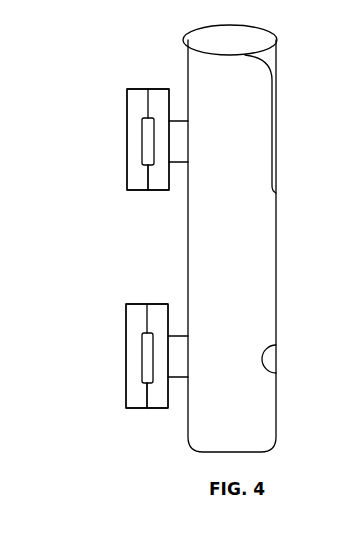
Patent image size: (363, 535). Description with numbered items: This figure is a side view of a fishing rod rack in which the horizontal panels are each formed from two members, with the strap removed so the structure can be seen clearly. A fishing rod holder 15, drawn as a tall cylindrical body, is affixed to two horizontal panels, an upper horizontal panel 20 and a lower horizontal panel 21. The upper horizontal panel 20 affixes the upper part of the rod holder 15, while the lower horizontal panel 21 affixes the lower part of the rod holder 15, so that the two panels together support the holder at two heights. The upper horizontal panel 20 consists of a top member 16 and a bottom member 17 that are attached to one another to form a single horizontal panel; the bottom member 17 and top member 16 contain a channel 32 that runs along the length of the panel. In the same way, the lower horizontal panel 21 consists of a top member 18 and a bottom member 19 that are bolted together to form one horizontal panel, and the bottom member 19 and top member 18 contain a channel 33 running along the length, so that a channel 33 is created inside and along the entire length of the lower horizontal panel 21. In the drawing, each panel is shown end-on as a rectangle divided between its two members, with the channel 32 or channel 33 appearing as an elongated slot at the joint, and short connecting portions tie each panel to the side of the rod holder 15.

The fishing rod holder 15 is at (288, 207).
The top member 16 is at (160, 73).
The bottom member 17 is at (136, 206).
The top member 18 is at (156, 426).
The bottom member 19 is at (137, 290).
The upper horizontal panel 20 is at (96, 108).
The lower horizontal panel 21 is at (92, 412).
The channel 32 is at (134, 151).
The channel 33 is at (134, 364).